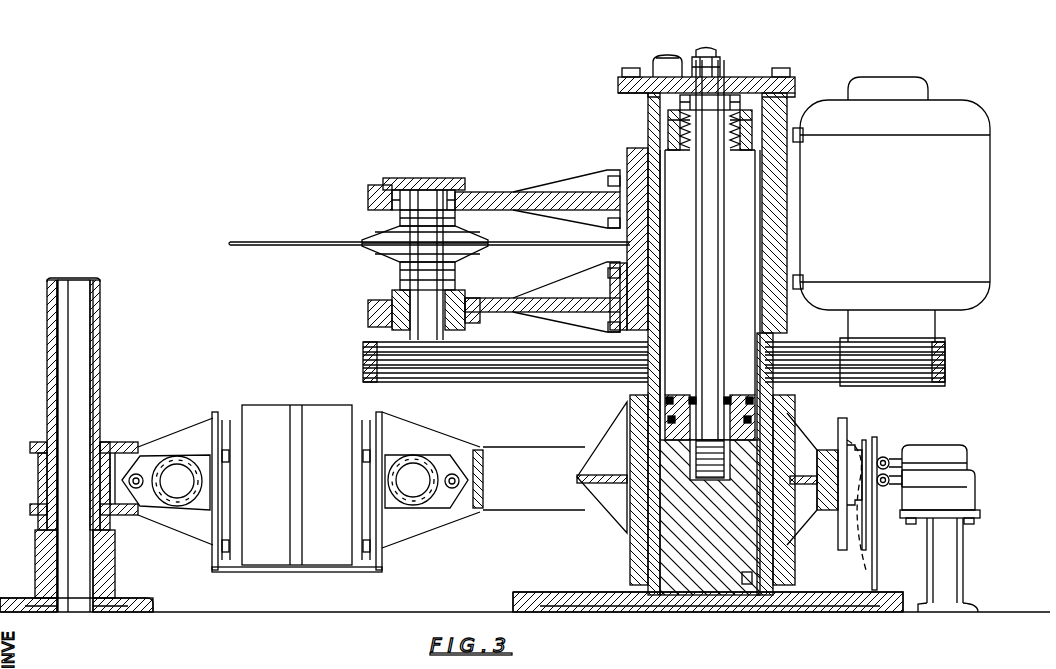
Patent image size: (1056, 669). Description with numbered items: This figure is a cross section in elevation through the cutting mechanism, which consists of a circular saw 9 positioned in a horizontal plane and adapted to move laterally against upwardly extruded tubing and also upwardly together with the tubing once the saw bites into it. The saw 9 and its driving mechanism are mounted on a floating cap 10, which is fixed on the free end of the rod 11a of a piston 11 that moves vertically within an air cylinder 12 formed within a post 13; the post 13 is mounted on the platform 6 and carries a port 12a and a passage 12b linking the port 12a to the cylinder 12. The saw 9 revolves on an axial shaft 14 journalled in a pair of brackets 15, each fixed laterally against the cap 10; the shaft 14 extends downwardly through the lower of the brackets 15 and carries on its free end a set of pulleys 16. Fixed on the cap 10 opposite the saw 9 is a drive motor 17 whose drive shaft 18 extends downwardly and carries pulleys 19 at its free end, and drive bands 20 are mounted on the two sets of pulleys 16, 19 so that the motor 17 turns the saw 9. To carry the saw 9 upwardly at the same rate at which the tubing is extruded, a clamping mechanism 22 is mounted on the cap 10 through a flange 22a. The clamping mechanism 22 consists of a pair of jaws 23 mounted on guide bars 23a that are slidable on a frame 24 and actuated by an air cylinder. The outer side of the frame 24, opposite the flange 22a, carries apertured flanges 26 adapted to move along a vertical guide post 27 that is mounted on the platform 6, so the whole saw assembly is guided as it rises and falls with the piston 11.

The platform 6 is at (1012, 611).
The circular saw 9 is at (262, 246).
The floating cap 10 is at (640, 126).
The piston 11 is at (640, 386).
The rod 11a is at (708, 188).
The air cylinder 12 is at (750, 283).
The port 12a is at (752, 580).
The passage 12b is at (770, 567).
The post 13 is at (655, 574).
The axial shaft 14 is at (420, 314).
The brackets 15 is at (495, 300).
The pulleys 16 is at (440, 382).
The drive motor 17 is at (891, 193).
The drive shaft 18 is at (920, 326).
The pulleys 19 is at (925, 382).
The drive bands 20 is at (790, 385).
The clamping mechanism 22 is at (327, 505).
The flange 22a is at (538, 498).
The jaws 23 is at (325, 570).
The guide bars 23a is at (172, 507).
The frame 24 is at (256, 573).
The apertured flanges 26 is at (117, 442).
The vertical guide post 27 is at (102, 346).